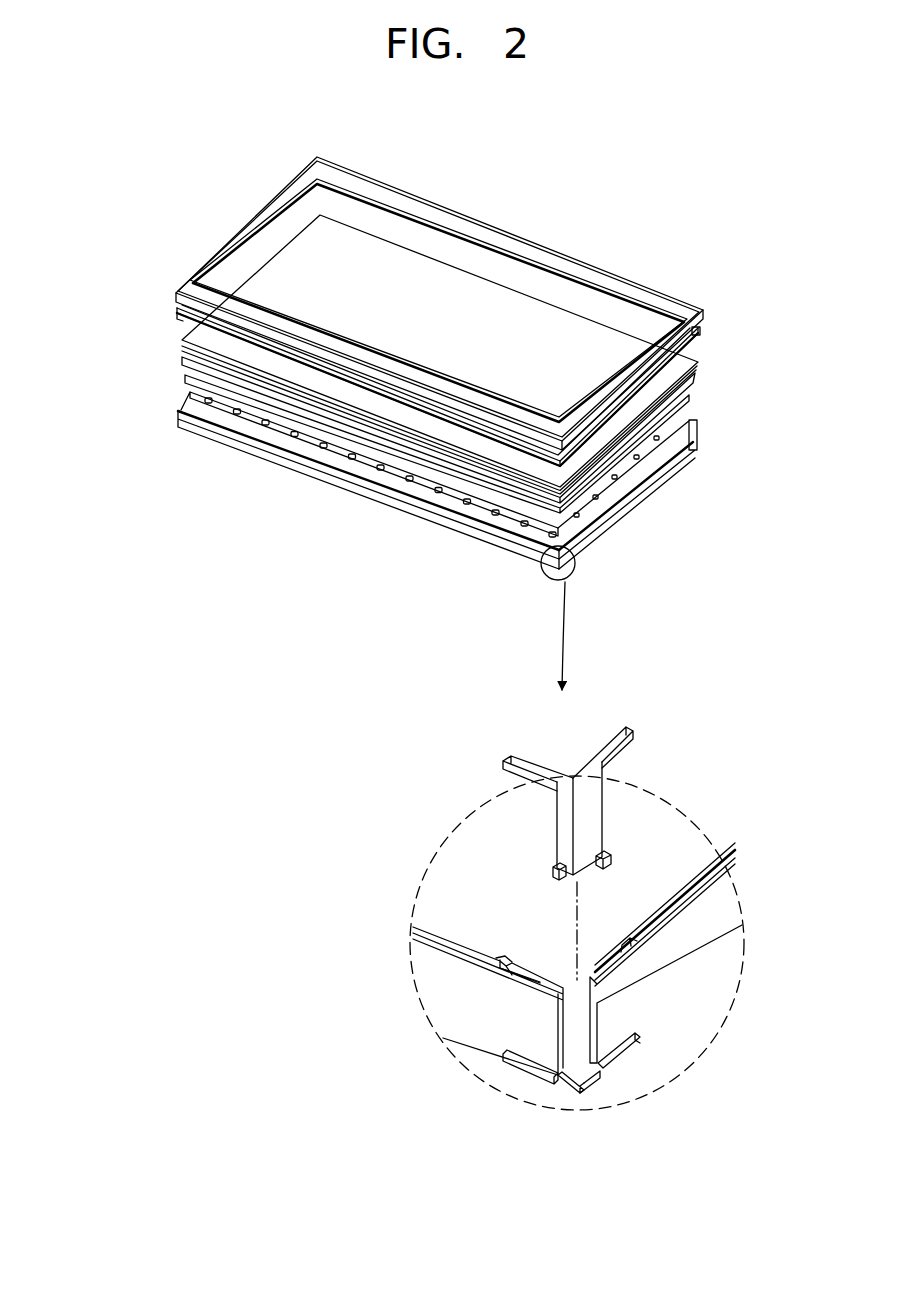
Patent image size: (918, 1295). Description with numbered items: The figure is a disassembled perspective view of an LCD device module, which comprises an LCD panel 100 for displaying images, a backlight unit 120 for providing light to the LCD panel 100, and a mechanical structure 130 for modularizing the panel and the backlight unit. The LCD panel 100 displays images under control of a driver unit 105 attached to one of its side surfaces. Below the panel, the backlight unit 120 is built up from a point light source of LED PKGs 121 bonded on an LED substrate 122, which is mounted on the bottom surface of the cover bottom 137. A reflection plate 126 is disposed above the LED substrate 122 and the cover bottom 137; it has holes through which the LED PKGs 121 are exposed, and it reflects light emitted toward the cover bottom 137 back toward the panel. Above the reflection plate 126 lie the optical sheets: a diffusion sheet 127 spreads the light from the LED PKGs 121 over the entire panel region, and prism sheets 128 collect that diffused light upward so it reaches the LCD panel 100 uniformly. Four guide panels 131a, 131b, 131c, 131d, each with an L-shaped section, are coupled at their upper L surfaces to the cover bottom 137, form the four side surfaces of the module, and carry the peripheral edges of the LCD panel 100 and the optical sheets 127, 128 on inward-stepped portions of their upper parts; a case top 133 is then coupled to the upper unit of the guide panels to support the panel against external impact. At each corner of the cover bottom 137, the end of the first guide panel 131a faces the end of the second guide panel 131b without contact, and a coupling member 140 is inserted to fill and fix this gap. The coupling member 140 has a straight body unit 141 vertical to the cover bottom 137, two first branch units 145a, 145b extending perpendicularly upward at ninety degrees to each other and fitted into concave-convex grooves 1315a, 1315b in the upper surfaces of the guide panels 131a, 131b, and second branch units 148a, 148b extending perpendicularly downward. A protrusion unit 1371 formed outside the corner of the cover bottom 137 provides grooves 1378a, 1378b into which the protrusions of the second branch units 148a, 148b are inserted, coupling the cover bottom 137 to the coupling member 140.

The guide panel 131d is at (537, 227).
The guide panel 131c is at (168, 380).
The case top 133 is at (705, 310).
The driver unit 105 is at (702, 331).
The LCD panel 100 is at (700, 348).
The prism sheets 128 is at (700, 365).
The diffusion sheet 127 is at (697, 386).
The reflection plate 126 is at (695, 408).
The LED substrate 122 is at (675, 430).
The LED PKGs 121 is at (635, 458).
The backlight unit 120 is at (797, 352).
The cover bottom 137 is at (642, 478).
The second guide panel 131b is at (637, 507).
The mechanical structure 130 is at (463, 752).
The first guide panel 131a is at (357, 487).
The first branch unit 145a is at (537, 760).
The first branch unit 145b is at (604, 748).
The coupling member 140 is at (602, 786).
The body unit 141 is at (598, 815).
The second branch unit 148a is at (560, 867).
The second branch unit 148b is at (609, 858).
The concave-convex groove 1315a is at (503, 966).
The concave-convex groove 1315b is at (620, 948).
The protrusion unit 1371 is at (523, 1067).
The groove 1378a is at (555, 1085).
The groove 1378b is at (620, 1080).